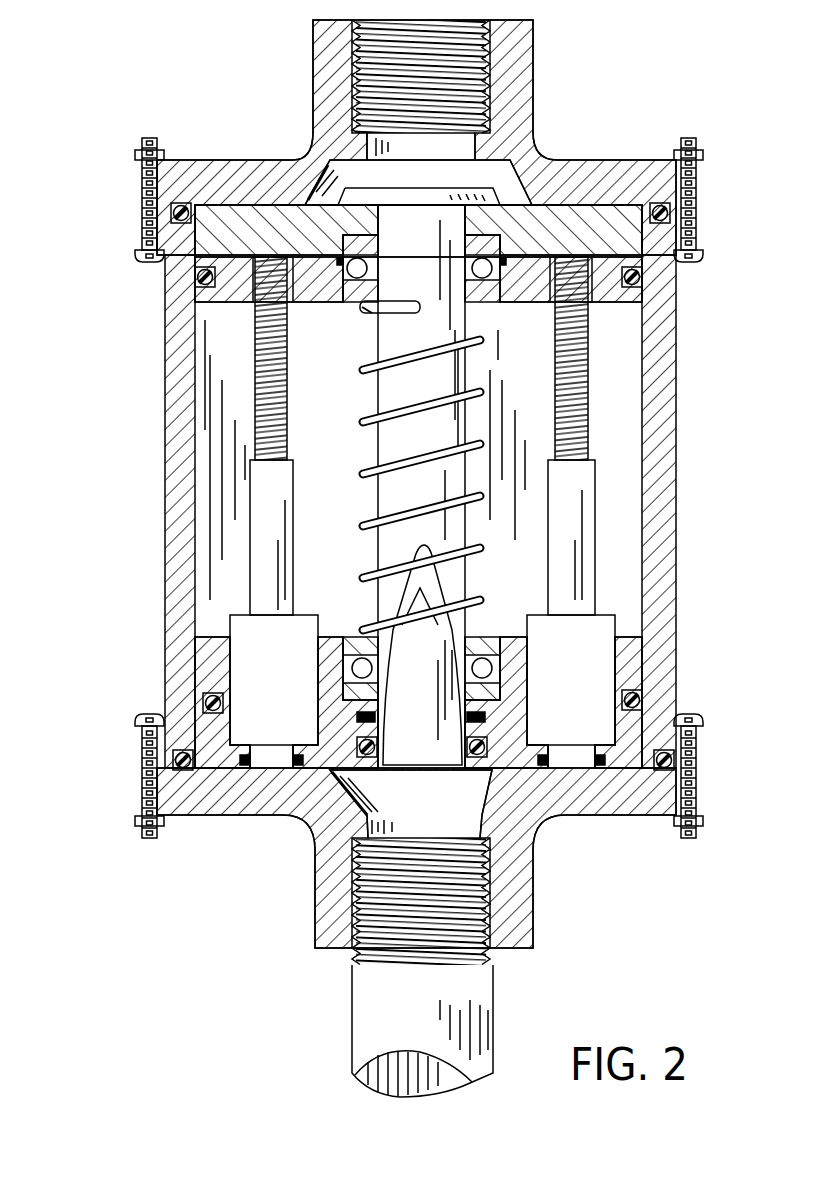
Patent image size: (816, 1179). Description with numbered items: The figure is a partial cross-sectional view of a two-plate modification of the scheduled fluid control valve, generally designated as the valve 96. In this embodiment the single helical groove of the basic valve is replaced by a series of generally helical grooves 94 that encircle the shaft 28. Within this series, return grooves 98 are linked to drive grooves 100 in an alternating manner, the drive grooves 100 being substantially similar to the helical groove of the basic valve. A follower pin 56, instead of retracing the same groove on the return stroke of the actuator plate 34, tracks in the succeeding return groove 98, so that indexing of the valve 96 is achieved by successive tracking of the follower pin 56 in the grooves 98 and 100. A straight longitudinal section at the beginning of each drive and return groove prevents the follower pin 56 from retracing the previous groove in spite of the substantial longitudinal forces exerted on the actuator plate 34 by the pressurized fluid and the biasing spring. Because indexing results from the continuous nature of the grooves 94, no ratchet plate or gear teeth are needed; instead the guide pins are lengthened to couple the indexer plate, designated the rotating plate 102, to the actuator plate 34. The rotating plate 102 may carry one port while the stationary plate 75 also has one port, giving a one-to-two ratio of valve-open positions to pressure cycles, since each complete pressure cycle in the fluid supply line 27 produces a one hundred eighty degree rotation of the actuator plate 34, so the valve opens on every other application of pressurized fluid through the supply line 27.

The stationary plate 75 is at (568, 228).
The rotating plate 102 is at (640, 297).
The shaft 28 is at (440, 483).
The valve 96 is at (142, 483).
The drive grooves 100 is at (393, 605).
The return grooves 98 is at (413, 655).
The actuator plate 34 is at (628, 663).
The follower pin 56 is at (322, 773).
The series of generally helical grooves 94 is at (413, 731).
The fluid supply line 27 is at (468, 997).